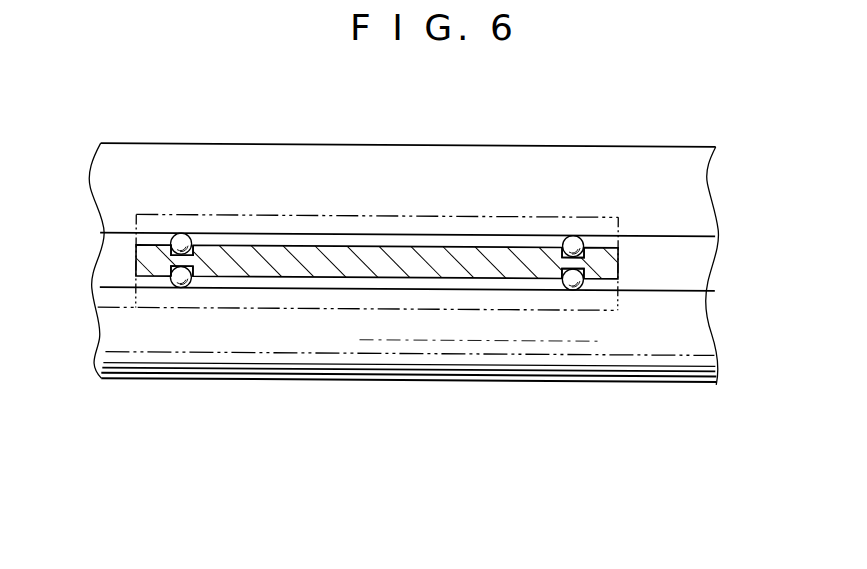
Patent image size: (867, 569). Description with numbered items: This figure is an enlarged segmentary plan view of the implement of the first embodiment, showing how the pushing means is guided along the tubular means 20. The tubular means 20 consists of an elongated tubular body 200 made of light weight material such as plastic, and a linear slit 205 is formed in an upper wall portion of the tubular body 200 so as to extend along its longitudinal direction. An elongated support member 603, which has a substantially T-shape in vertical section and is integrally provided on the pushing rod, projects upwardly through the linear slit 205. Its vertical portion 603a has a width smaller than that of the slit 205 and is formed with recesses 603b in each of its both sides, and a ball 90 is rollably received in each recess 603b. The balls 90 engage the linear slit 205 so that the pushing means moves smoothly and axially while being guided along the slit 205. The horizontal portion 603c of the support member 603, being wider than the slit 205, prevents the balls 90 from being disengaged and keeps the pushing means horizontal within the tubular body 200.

The tubular means 20 is at (498, 120).
The ball 90 is at (177, 233).
The tubular body 200 is at (308, 162).
The linear slit 205 is at (688, 262).
The support member 603 is at (416, 312).
The vertical portion 603a is at (320, 277).
The recess 603b is at (196, 245).
The horizontal portion 603c is at (378, 213).